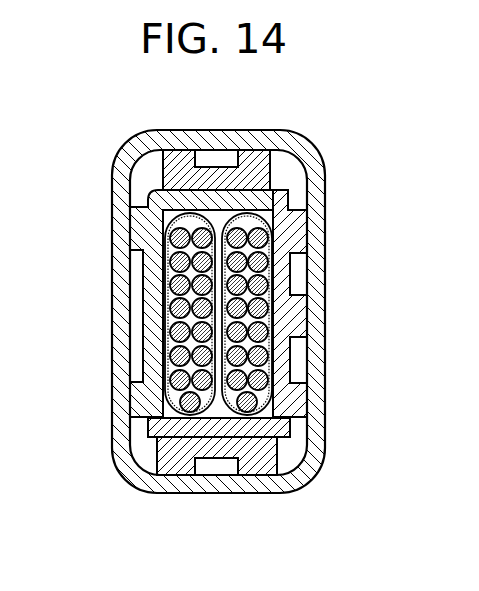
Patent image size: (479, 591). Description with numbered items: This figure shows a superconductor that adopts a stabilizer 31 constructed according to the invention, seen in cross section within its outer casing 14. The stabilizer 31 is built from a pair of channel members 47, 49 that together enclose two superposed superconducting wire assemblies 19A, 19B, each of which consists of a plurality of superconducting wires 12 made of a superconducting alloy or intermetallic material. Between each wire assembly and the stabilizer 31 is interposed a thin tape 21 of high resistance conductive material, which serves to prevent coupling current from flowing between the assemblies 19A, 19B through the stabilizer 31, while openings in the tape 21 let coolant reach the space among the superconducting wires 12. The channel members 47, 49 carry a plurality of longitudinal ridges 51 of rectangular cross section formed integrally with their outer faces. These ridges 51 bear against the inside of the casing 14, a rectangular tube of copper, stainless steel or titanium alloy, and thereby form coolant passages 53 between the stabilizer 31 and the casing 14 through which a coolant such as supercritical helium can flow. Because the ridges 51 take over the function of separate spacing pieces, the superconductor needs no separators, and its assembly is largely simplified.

The superconducting wires 12 is at (172, 305).
The casing 14 is at (318, 447).
The superconducting wire assembly 19A is at (160, 418).
The superconducting wire assembly 19B is at (231, 416).
The thin tape 21 is at (162, 401).
The stabilizer 31 is at (150, 437).
The channel member 47 is at (297, 270).
The channel member 49 is at (152, 203).
The longitudinal ridges 51 is at (177, 163).
The coolant passages 53 is at (300, 172).